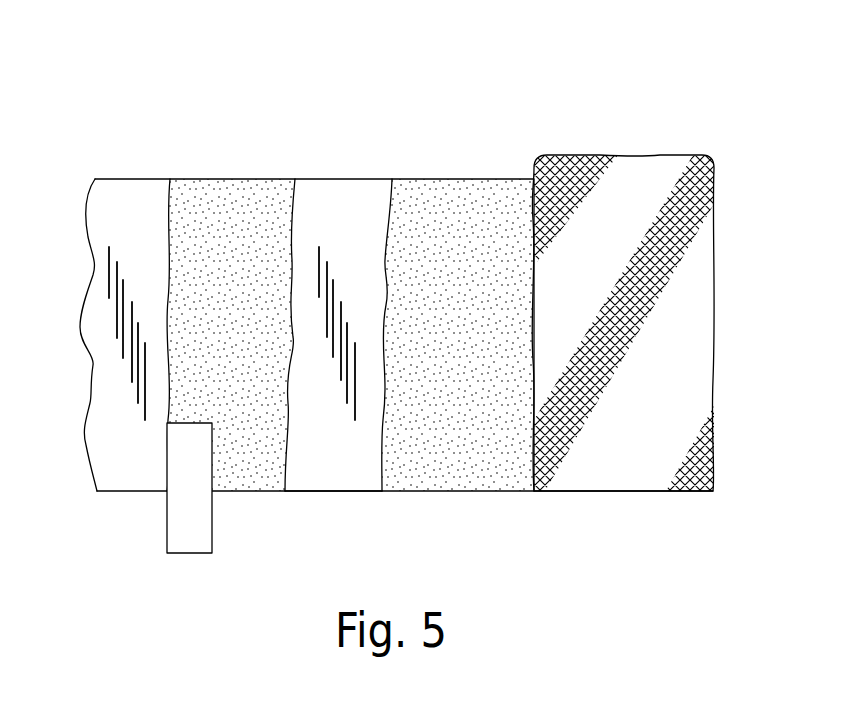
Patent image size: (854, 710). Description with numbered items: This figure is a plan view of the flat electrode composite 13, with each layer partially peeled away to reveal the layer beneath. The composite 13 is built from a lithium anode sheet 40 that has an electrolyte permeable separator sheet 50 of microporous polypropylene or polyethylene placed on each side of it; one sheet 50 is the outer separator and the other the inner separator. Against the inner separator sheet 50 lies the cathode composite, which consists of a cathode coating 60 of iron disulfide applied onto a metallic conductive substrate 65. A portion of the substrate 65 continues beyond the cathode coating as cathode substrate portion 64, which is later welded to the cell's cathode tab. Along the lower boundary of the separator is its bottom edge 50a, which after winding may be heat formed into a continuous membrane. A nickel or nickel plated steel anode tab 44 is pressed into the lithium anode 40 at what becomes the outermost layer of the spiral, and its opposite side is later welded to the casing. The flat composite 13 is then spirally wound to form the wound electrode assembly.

The flat electrode composite 13 is at (283, 70).
The separator sheet 50 is at (130, 185).
The lithium anode sheet 40 is at (235, 185).
The cathode coating 60 is at (462, 185).
The cathode substrate portion 64 is at (645, 157).
The cathode substrate 65 is at (616, 485).
The separator bottom edge 50a is at (335, 485).
The anode tab 44 is at (166, 522).